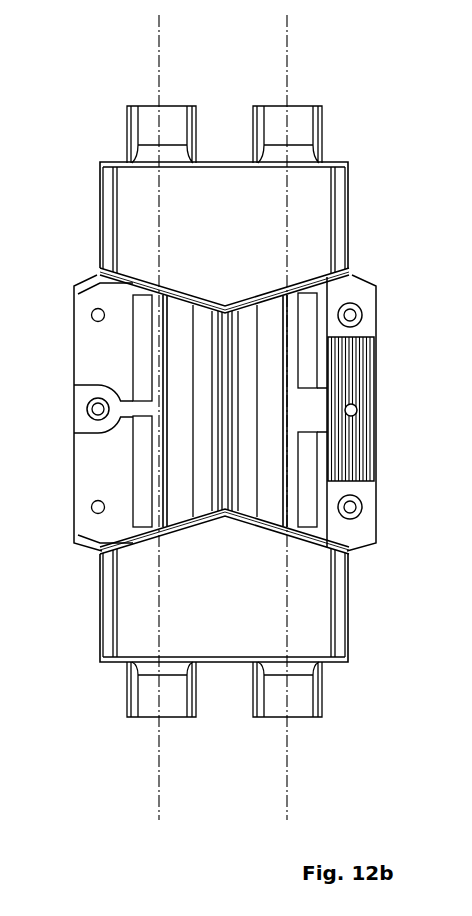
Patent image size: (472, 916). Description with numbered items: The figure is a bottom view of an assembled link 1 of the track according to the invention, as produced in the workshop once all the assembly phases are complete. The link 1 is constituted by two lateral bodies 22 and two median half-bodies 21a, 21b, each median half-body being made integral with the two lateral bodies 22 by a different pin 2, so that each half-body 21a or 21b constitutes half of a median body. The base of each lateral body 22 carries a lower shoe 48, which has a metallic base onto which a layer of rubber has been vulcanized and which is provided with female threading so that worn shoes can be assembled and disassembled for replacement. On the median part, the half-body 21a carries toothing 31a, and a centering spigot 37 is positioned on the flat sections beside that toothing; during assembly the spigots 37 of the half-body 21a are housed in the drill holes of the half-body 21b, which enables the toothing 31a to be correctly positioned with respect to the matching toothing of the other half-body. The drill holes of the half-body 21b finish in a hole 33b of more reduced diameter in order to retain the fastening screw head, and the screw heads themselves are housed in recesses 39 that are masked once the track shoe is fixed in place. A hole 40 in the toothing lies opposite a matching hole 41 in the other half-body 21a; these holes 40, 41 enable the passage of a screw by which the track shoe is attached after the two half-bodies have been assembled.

The link 1 is at (60, 696).
The pin 2 is at (158, 58).
The lateral body 22 is at (127, 208).
The lower shoe 48 is at (224, 412).
The half-body 21a is at (363, 290).
The half-body 21b is at (90, 353).
The toothing 31a is at (375, 372).
The hole 40 is at (84, 411).
The matching hole 41 is at (357, 410).
The recess 39 is at (83, 471).
The hole of more reduced diameter 33b is at (91, 508).
The centering spigot 37 is at (358, 513).